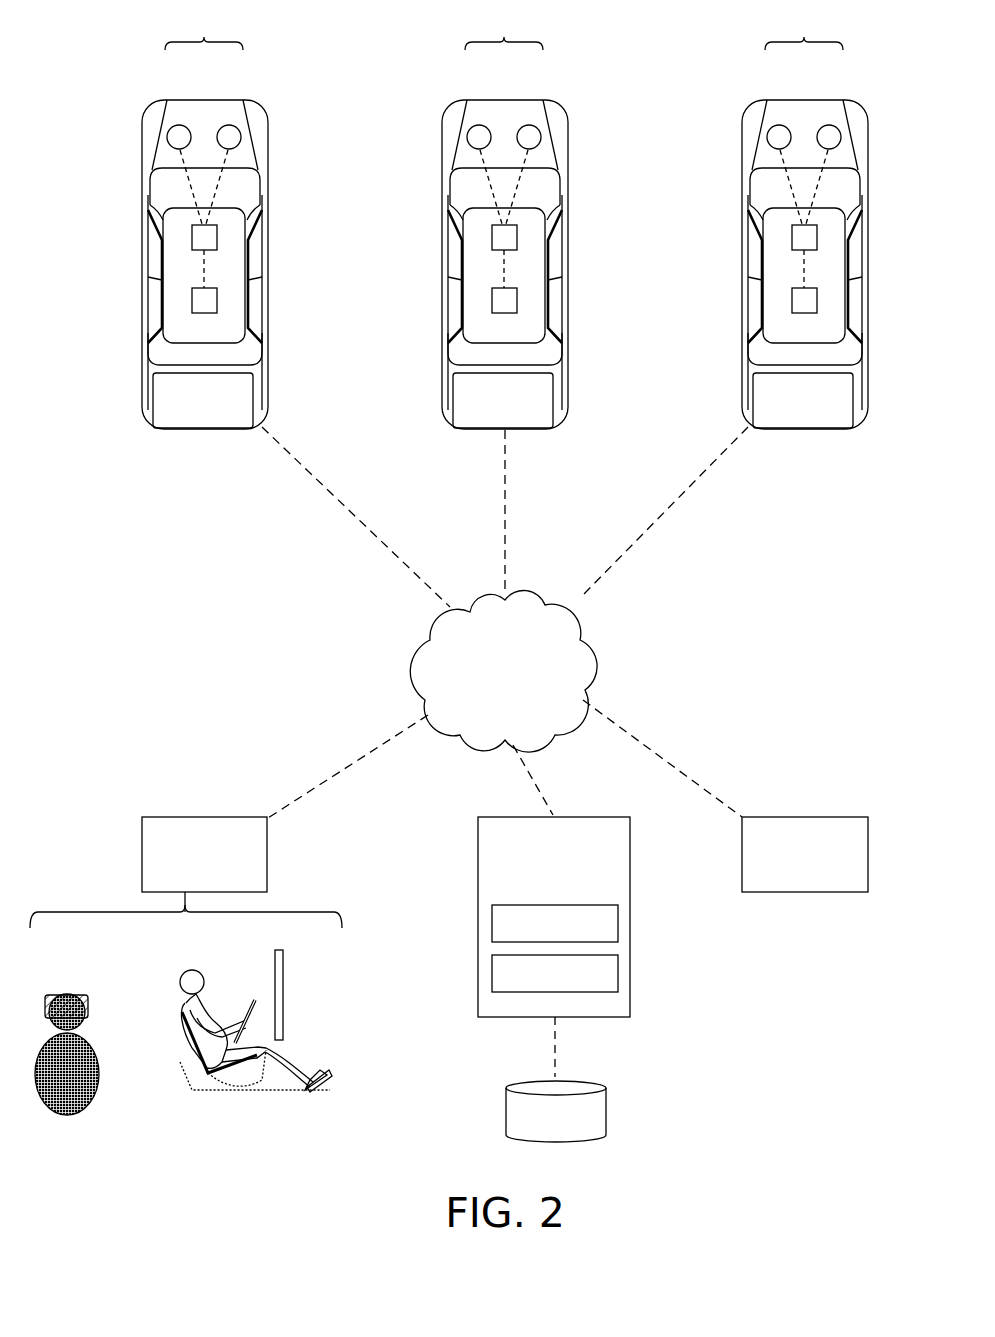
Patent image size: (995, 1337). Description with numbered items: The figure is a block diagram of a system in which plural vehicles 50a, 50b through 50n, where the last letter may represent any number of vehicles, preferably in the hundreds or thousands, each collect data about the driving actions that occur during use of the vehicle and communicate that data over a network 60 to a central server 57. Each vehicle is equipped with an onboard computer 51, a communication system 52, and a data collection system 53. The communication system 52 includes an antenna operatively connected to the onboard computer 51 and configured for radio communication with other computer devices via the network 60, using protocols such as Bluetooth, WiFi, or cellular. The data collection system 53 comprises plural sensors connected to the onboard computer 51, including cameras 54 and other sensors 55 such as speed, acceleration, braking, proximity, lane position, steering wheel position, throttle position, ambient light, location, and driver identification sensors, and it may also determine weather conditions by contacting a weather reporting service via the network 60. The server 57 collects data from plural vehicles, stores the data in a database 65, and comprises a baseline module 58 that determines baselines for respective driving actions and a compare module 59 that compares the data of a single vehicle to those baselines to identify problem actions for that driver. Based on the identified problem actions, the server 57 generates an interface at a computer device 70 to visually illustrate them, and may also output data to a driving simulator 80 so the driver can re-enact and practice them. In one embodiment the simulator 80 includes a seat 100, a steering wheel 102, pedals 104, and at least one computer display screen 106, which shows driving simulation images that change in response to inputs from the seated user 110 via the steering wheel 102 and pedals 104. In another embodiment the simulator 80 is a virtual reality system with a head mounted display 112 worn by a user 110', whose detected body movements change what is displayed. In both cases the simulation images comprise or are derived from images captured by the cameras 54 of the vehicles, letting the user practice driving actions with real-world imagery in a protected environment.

The vehicle 50a is at (130, 98).
The vehicle 50b is at (430, 98).
The vehicle 50n is at (730, 98).
The onboard computer 51 is at (192, 240).
The communication system 52 is at (192, 300).
The data collection system 53 is at (204, 37).
The cameras 54 is at (179, 125).
The other sensors 55 is at (229, 125).
The server 57 is at (478, 850).
The baseline module 58 is at (492, 923).
The compare module 59 is at (492, 973).
The network 60 is at (540, 598).
The database 65 is at (506, 1112).
The computer device 70 is at (768, 815).
The driving simulator 80 is at (167, 815).
The seat 100 is at (223, 1072).
The steering wheel 102 is at (252, 1005).
The pedals 104 is at (323, 1082).
The computer display screen 106 is at (275, 958).
The seated user 110 is at (247, 1012).
The user 110' is at (92, 1067).
The head mounted display 112 is at (70, 993).